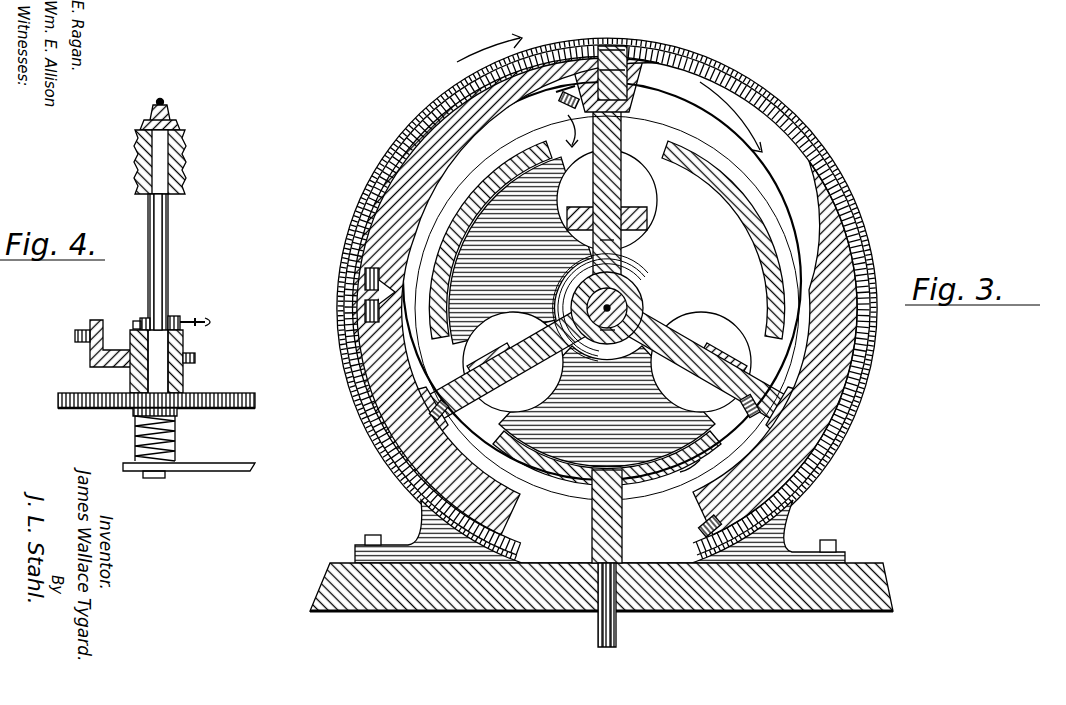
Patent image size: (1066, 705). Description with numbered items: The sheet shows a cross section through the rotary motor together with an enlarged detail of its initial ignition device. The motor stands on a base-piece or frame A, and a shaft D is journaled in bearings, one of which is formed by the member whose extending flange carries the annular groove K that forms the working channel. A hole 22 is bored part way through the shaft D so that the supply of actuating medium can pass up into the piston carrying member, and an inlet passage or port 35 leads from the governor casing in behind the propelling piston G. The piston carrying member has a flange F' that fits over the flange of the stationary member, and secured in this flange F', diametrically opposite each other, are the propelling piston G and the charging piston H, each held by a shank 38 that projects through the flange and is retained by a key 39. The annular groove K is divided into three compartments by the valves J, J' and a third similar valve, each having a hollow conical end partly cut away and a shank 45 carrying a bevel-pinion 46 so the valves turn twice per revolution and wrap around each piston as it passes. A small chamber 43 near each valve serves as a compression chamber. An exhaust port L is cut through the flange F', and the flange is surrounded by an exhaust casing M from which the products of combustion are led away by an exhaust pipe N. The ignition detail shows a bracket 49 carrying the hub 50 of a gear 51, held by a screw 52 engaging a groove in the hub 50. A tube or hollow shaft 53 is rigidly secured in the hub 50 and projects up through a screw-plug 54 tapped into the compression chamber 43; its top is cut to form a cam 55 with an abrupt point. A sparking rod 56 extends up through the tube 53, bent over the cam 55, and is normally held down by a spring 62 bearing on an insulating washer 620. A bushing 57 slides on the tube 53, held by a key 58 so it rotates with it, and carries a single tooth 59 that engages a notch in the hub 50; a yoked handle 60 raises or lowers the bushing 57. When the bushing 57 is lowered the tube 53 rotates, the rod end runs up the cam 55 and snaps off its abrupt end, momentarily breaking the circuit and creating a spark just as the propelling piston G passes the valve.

In FIG. 3, the inlet passage or port 35 is at (556, 92).
In FIG. 3, the shank 38 is at (600, 78).
In FIG. 3, the key 39 is at (622, 56).
In FIG. 3, the small chamber 43 is at (690, 100).
In FIG. 3, the shank 45 is at (612, 240).
In FIG. 3, the bevel-pinion 46 is at (625, 215).
In FIG. 3, the hole 22 is at (614, 332).
In FIG. 3, the exhaust casing M is at (612, 44).
In FIG. 3, the annular groove K is at (858, 219).
In FIG. 3, the exhaust port L is at (776, 145).
In FIG. 3, the charging piston H is at (642, 133).
In FIG. 3, the flange F' is at (494, 296).
In FIG. 3, the valve J is at (633, 145).
In FIG. 3, the valve J' is at (763, 387).
In FIG. 3, the shaft D is at (625, 300).
In FIG. 3, the propelling piston G is at (603, 500).
In FIG. 3, the exhaust pipe N is at (600, 622).
In FIG. 3, the base-piece or frame A is at (712, 606).
In FIG. 4, the bracket 49 is at (90, 357).
In FIG. 4, the hub 50 is at (185, 372).
In FIG. 4, the gear 51 is at (248, 409).
In FIG. 4, the screw 52 is at (196, 358).
In FIG. 4, the tube or hollow shaft 53 is at (168, 247).
In FIG. 4, the screw-plug 54 is at (186, 166).
In FIG. 4, the cam 55 is at (158, 100).
In FIG. 4, the sparking rod 56 is at (168, 104).
In FIG. 4, the bushing 57 is at (146, 318).
In FIG. 4, the key 58 is at (175, 318).
In FIG. 4, the single tooth 59 is at (138, 327).
In FIG. 4, the yoked handle 60 is at (214, 322).
In FIG. 4, the spring 62 is at (135, 435).
In FIG. 4, the insulating washer 620 is at (178, 413).